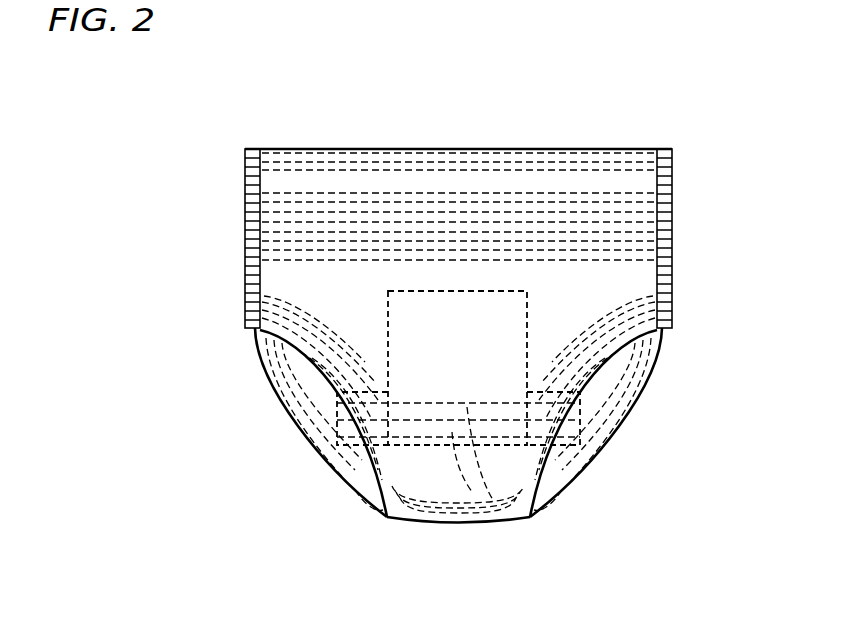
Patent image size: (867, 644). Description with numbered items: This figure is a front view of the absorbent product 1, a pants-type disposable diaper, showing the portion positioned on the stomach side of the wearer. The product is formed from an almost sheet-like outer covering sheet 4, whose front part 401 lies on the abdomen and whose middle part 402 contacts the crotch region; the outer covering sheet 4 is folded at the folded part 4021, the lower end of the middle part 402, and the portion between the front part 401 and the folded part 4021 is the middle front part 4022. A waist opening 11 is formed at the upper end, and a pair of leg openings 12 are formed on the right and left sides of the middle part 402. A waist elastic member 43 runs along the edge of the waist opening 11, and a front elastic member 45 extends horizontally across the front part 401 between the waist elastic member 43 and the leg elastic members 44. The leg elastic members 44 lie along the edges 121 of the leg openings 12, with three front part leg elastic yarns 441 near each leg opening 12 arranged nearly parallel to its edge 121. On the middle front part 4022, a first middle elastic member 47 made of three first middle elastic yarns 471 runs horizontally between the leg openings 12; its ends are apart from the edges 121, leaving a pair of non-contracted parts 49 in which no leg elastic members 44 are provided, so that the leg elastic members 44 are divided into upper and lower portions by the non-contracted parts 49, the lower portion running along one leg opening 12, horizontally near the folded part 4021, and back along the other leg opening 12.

The absorbent product 1 is at (243, 110).
The waist opening 11 is at (462, 148).
The outer covering sheet 4 is at (488, 181).
The waist elastic member 43 is at (594, 160).
The front elastic member 45 is at (594, 223).
The front part 401 is at (291, 278).
The middle part 402 is at (373, 406).
The middle front part 4022 is at (362, 361).
The leg elastic members 44 is at (492, 453).
The front part leg elastic yarns 441 is at (332, 392).
The non-contracted parts 49 is at (372, 417).
The leg openings 12 is at (462, 377).
The edges of the leg openings 121 is at (343, 405).
The folded part 4021 is at (448, 529).
The first middle elastic member 47 is at (501, 514).
The first middle elastic yarns 471 is at (537, 524).